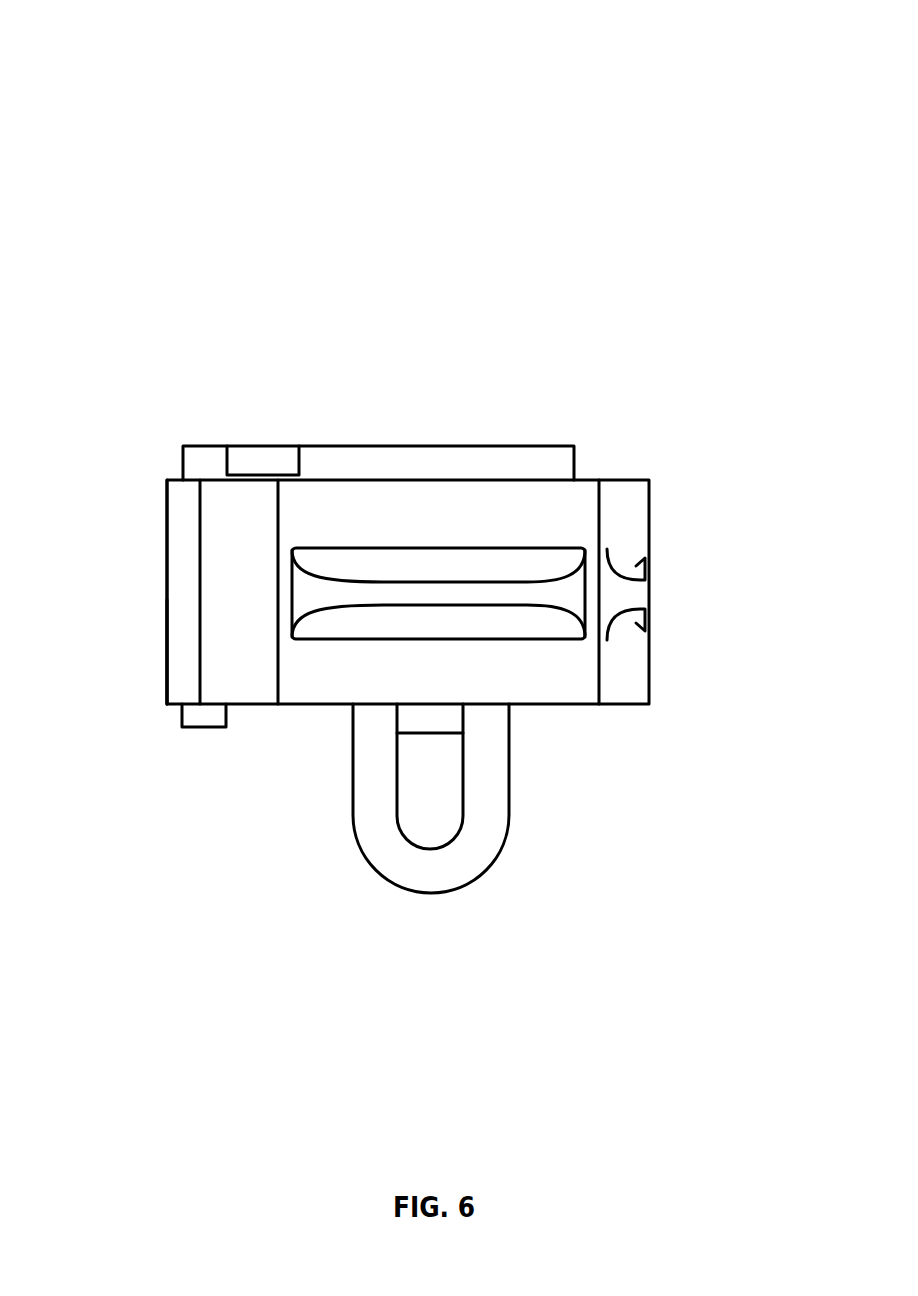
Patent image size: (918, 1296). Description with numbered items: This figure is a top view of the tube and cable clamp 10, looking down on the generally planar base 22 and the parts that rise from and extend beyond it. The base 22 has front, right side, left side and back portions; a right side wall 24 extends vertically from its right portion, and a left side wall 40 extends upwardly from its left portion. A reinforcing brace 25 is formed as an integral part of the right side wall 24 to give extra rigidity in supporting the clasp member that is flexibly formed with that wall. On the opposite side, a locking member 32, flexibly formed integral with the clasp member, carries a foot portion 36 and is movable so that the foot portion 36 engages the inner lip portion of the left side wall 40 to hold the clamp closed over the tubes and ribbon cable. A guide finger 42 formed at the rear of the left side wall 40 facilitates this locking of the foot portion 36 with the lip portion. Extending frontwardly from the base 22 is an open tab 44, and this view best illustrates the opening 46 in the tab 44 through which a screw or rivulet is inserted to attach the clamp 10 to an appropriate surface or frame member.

The tube and cable clamp 10 is at (668, 227).
The base 22 is at (540, 453).
The right side wall 24 is at (480, 522).
The reinforcing brace 25 is at (627, 590).
The locking member 32 is at (213, 521).
The foot portion 36 is at (178, 630).
The left side wall 40 is at (197, 720).
The guide finger 42 is at (270, 453).
The open tab 44 is at (432, 893).
The opening 46 is at (435, 785).